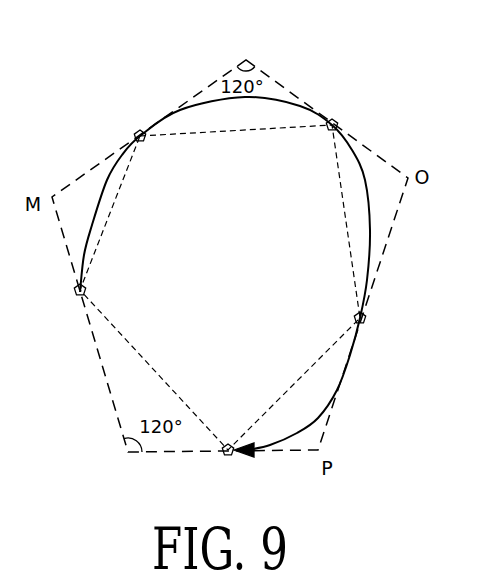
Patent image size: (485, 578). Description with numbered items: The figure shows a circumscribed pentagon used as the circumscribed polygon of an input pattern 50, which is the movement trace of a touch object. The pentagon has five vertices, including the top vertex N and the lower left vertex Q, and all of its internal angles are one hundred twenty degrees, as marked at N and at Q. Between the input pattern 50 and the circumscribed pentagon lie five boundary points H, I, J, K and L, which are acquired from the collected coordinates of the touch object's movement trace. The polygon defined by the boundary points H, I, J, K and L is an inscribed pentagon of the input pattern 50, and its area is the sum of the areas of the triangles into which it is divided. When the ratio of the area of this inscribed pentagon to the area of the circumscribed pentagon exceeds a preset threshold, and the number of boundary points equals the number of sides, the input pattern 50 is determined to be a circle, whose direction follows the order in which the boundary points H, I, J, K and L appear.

The input pattern 50 is at (366, 176).
The boundary point H is at (70, 300).
The boundary point I is at (132, 124).
The boundary point J is at (336, 111).
The boundary point K is at (371, 328).
The boundary point L is at (227, 467).
The vertex of circumscribed pentagon N is at (246, 51).
The vertex of circumscribed pentagon Q is at (128, 457).